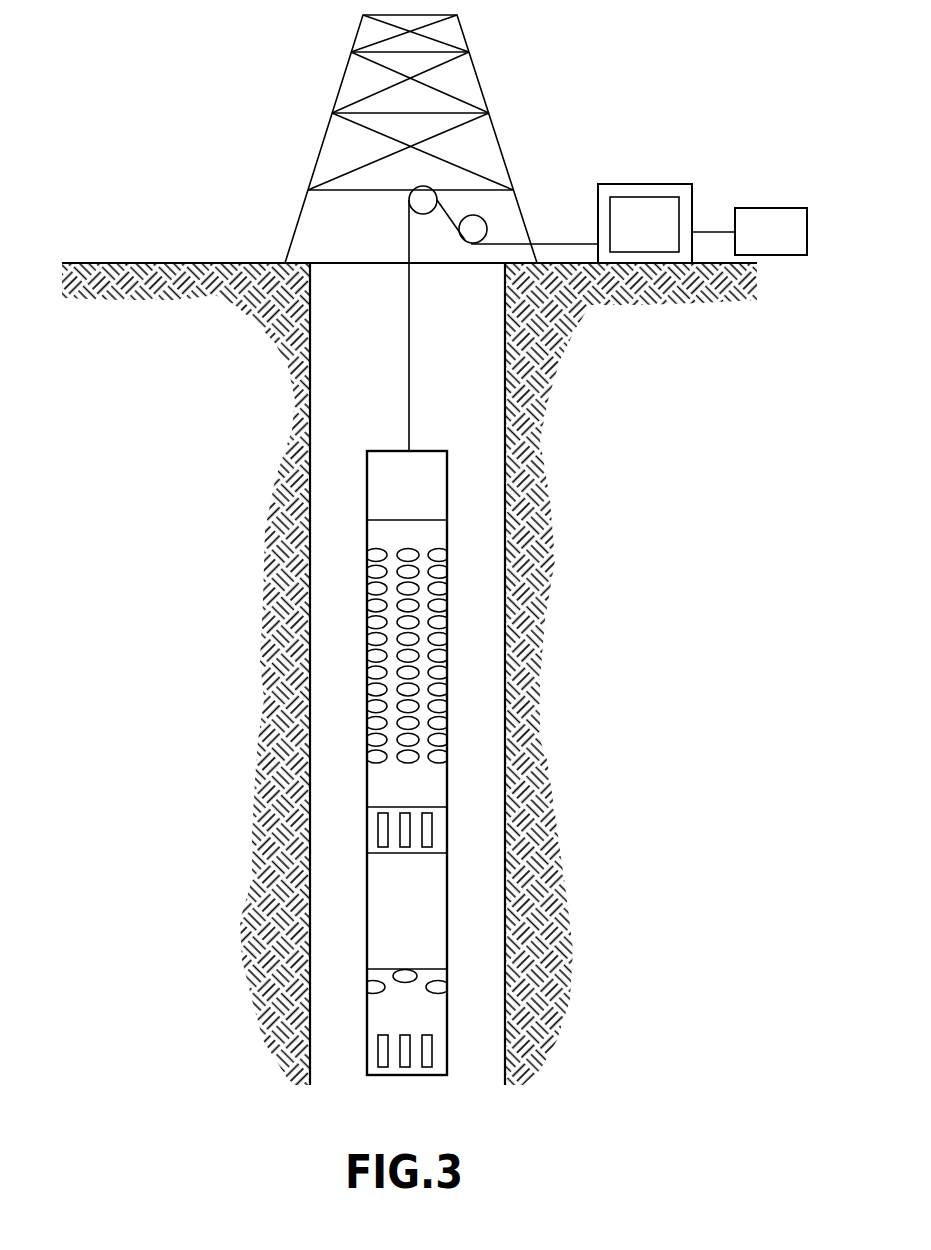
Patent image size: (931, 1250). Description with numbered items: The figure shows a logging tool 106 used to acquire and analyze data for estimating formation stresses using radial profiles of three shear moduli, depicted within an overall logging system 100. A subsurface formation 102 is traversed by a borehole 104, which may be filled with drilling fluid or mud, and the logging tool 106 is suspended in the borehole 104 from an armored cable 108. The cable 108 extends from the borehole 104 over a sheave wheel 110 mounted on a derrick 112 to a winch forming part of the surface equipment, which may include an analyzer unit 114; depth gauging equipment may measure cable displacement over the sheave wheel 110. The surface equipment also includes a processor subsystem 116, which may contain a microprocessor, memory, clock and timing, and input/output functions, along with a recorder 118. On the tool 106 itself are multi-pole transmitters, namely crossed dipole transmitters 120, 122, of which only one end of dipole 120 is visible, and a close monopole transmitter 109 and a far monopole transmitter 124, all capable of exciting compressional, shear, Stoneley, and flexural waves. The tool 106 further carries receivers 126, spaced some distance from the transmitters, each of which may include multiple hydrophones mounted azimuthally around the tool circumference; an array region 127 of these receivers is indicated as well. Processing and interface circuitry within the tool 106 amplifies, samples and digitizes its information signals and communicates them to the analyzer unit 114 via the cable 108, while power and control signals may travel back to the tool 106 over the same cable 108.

The well logging system 100 is at (175, 192).
The subsurface formation 102 is at (295, 430).
The borehole 104 is at (394, 382).
The logging tool 106 is at (447, 500).
The armored cable 108 is at (409, 310).
The monopole transmitter 109 is at (377, 832).
The sheave wheel 110 is at (408, 195).
The derrick 112 is at (478, 78).
The analyzer unit 114 is at (597, 214).
The processor subsystem 116 is at (645, 218).
The recorder 118 is at (757, 208).
The crossed dipole transmitter 120 is at (402, 975).
The crossed dipole transmitter 122 is at (373, 987).
The monopole transmitter 124 is at (377, 1042).
The receivers 126 is at (447, 587).
The transducer array 127 is at (447, 755).